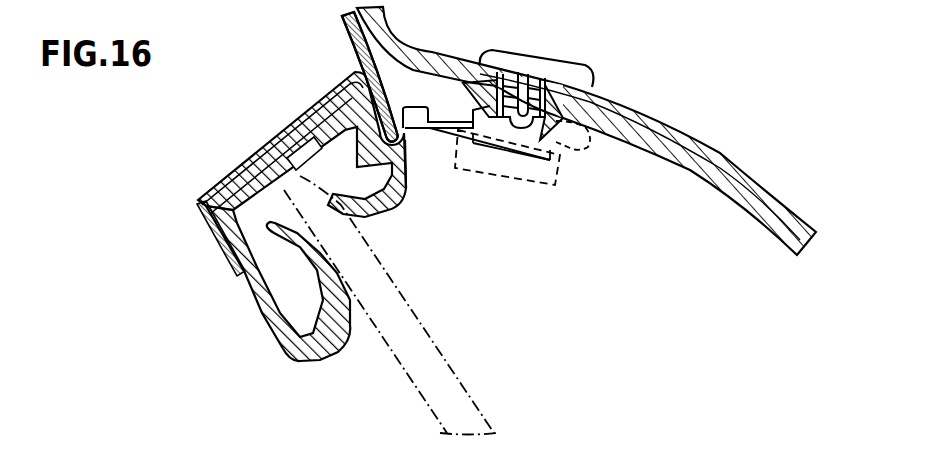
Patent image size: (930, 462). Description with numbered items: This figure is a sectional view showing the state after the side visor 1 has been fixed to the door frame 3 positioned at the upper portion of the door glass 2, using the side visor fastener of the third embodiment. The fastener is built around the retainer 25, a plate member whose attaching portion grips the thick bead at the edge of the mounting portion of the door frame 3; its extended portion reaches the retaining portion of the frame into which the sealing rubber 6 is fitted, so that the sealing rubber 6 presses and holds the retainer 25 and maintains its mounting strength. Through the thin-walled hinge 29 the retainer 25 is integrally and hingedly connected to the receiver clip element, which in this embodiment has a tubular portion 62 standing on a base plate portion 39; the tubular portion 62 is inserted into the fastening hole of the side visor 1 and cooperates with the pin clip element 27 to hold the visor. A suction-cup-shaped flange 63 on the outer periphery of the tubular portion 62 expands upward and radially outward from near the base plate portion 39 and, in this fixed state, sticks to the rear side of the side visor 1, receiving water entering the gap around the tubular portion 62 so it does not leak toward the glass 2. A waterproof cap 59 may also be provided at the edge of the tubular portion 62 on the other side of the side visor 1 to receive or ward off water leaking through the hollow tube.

The side visor 1 is at (663, 121).
The door glass 2 is at (474, 401).
The door frame 3 is at (263, 139).
The sealing rubber 6 is at (268, 312).
The retainer 25 is at (421, 142).
The pin clip element 27 is at (551, 54).
The thin-walled hinge 29 is at (445, 118).
The base plate portion 39 is at (478, 125).
The waterproof cap 59 is at (552, 190).
The tubular portion 62 is at (565, 84).
The suction-cup-shaped flange 63 is at (578, 128).